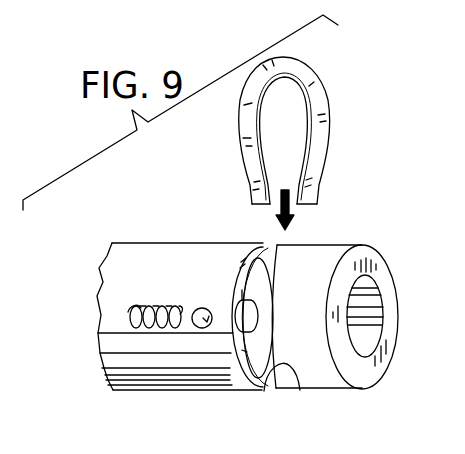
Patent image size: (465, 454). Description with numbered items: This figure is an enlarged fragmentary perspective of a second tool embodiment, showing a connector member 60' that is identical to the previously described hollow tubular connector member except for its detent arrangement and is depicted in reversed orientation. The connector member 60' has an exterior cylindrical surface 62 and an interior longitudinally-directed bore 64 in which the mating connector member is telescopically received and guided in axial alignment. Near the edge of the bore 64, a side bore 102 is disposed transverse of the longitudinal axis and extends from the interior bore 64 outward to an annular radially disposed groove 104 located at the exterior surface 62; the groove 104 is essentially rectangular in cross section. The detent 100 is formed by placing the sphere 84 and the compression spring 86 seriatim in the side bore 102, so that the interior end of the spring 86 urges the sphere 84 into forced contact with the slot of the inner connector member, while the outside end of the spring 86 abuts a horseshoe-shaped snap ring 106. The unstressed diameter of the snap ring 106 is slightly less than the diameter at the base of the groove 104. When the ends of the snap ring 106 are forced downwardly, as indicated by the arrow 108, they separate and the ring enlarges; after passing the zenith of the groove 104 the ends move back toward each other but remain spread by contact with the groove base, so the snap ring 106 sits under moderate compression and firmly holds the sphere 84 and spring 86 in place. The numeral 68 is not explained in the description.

The connector member 60' is at (167, 395).
The exterior cylindrical surface 62 is at (136, 262).
The interior bore 64 is at (367, 338).
The bore 68 is at (388, 308).
The sphere 84 is at (202, 330).
The compression spring 86 is at (133, 322).
The detent 100 is at (182, 282).
The side bore 102 is at (240, 342).
The annular groove 104 is at (288, 380).
The horseshoe-shaped snap ring 106 is at (313, 103).
The arrow 108 is at (270, 207).